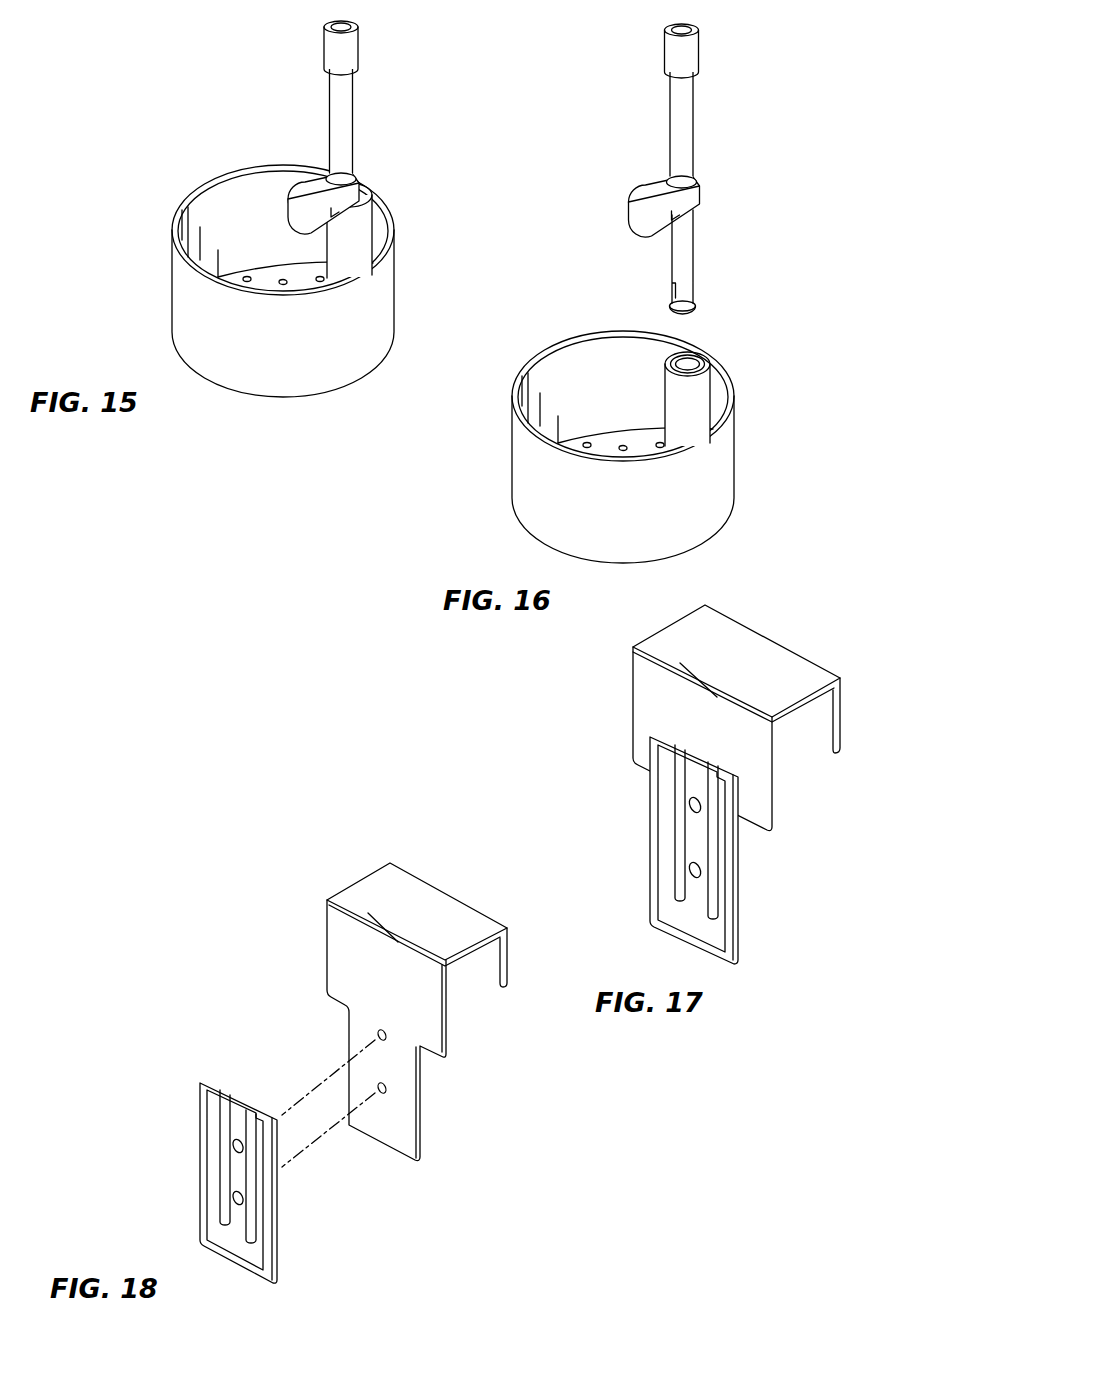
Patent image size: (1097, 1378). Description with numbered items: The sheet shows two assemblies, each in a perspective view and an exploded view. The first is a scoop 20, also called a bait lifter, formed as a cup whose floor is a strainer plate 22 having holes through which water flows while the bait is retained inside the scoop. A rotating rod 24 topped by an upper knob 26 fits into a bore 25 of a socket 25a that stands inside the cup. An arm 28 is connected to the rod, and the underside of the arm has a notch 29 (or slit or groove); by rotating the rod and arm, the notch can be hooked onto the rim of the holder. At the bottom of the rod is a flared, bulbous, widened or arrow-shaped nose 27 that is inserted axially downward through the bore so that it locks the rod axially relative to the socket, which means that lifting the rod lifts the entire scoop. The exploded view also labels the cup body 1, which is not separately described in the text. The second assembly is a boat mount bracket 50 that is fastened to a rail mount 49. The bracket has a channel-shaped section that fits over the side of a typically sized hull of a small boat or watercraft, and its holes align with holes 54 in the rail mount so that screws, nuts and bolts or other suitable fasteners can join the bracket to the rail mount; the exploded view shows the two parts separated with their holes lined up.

In FIG. 16, the cup housing 1 is at (721, 423).
In FIG. 15, the scoop 20 is at (180, 127).
In FIG. 16, the scoop 20 is at (634, 290).
In FIG. 16, the strainer plate 22 is at (605, 446).
In FIG. 16, the rotating rod 24 is at (745, 123).
In FIG. 16, the bore 25 is at (683, 366).
In FIG. 16, the socket 25a is at (699, 384).
In FIG. 16, the upper knob 26 is at (744, 47).
In FIG. 16, the nose 27 is at (746, 262).
In FIG. 16, the arm 28 is at (626, 201).
In FIG. 16, the notch 29 is at (747, 227).
In FIG. 17, the rail mount 49 is at (694, 850).
In FIG. 18, the rail mount 49 is at (272, 1183).
In FIG. 17, the boat mount bracket 50 is at (736, 718).
In FIG. 18, the boat mount bracket 50 is at (466, 925).
In FIG. 18, the holes 54 is at (234, 1196).